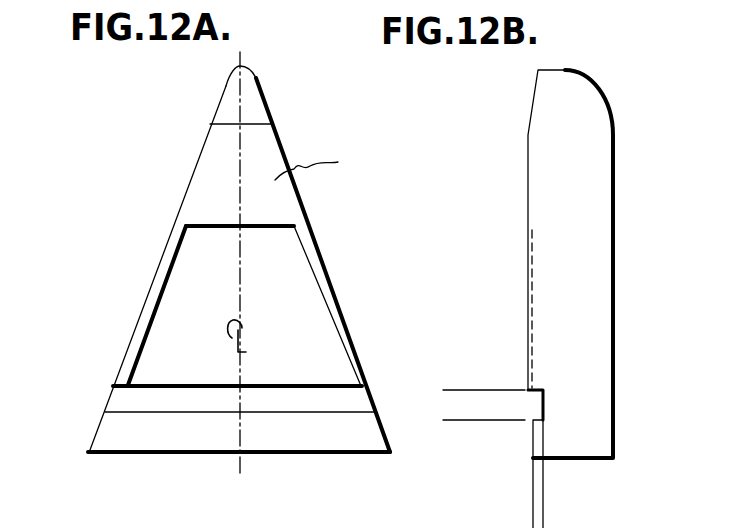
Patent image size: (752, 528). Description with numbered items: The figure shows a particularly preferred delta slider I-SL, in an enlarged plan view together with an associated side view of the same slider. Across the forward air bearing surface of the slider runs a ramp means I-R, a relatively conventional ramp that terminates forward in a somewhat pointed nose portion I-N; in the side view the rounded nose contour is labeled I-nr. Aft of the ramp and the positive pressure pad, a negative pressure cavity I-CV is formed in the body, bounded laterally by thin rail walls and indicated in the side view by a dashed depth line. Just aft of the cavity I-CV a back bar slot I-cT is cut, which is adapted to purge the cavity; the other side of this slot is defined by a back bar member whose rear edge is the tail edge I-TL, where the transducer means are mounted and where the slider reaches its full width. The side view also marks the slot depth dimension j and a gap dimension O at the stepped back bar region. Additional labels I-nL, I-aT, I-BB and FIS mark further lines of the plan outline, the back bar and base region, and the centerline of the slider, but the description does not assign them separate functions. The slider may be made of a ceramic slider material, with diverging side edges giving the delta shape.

In FIG. 12A, the ramp means I-R is at (228, 89).
In FIG. 12B, the ramp means I-R is at (528, 113).
In FIG. 12A, the nose portion I-N is at (278, 95).
In FIG. 12A, the delta slider I-SL is at (175, 165).
In FIG. 12B, the delta slider I-SL is at (626, 195).
In FIG. 12A, the inner line I-nL is at (160, 259).
In FIG. 12A, the negative pressure cavity I-CV is at (307, 331).
In FIG. 12B, the negative pressure cavity I-CV is at (536, 300).
In FIG. 12A, the anterior top line I-aT is at (113, 402).
In FIG. 12A, the bottom base line I-BB is at (111, 441).
In FIG. 12A, the centerline axis FIS is at (240, 474).
In FIG. 12A, the tail edge I-TL is at (305, 455).
In FIG. 12B, the nose radius I-nr is at (614, 86).
In FIG. 12B, the back bar slot I-cT is at (545, 400).
In FIG. 12B, the step height dimension j is at (475, 355).
In FIG. 12B, the gap width dimension O is at (487, 508).